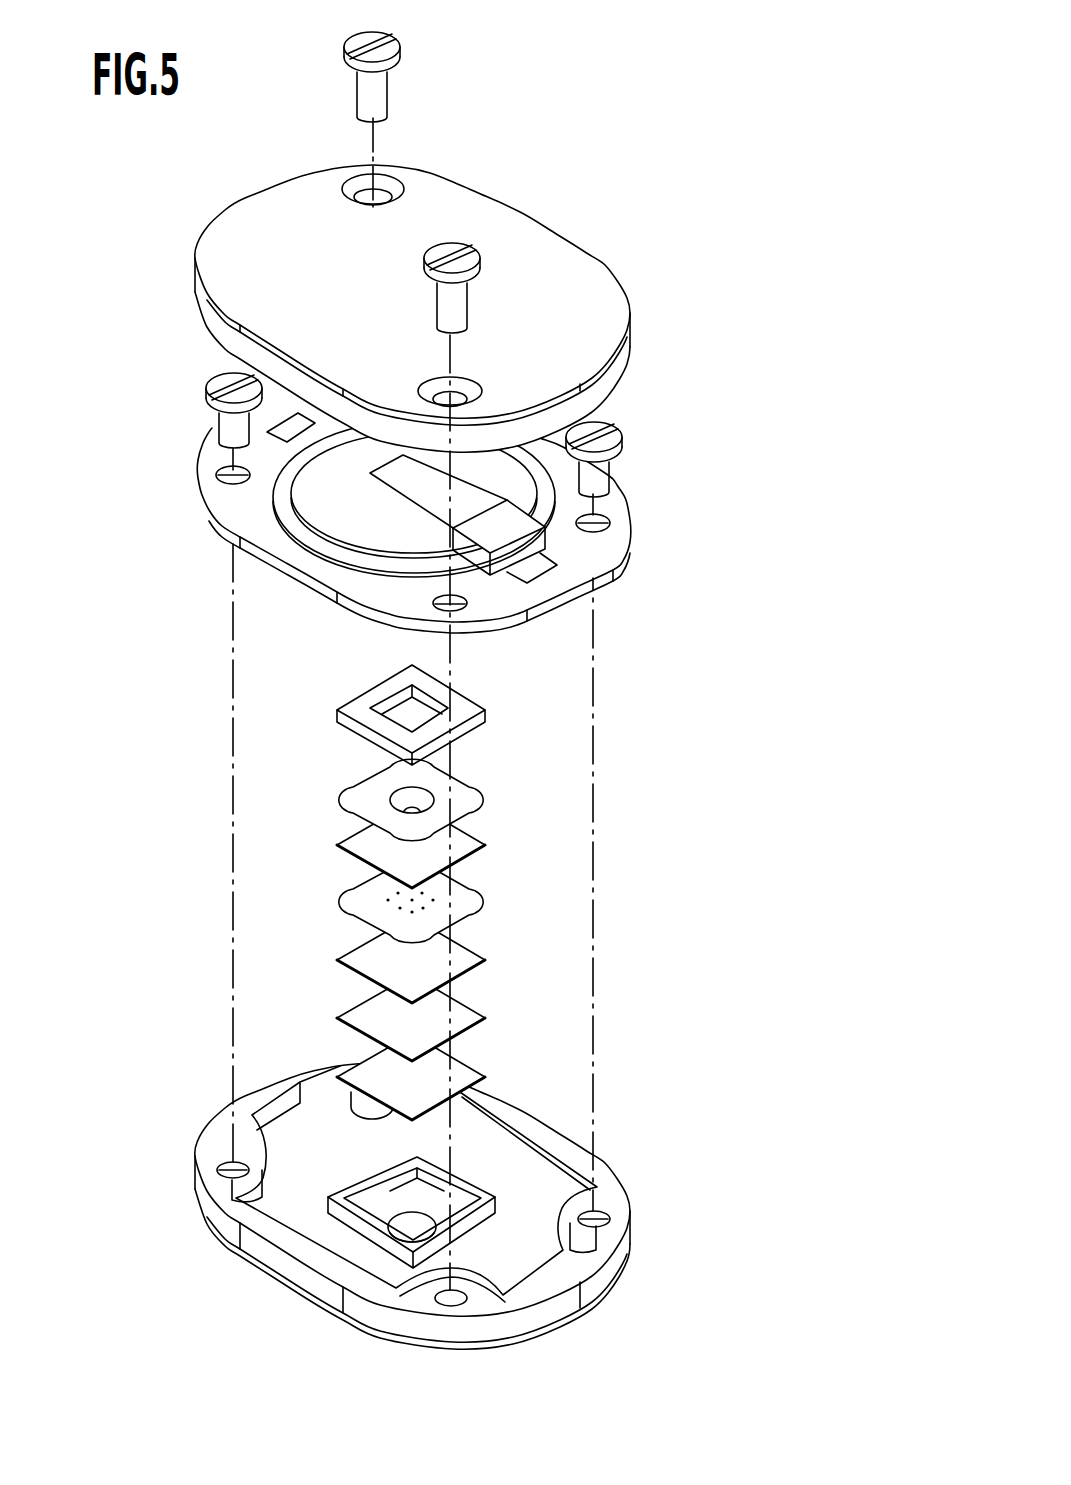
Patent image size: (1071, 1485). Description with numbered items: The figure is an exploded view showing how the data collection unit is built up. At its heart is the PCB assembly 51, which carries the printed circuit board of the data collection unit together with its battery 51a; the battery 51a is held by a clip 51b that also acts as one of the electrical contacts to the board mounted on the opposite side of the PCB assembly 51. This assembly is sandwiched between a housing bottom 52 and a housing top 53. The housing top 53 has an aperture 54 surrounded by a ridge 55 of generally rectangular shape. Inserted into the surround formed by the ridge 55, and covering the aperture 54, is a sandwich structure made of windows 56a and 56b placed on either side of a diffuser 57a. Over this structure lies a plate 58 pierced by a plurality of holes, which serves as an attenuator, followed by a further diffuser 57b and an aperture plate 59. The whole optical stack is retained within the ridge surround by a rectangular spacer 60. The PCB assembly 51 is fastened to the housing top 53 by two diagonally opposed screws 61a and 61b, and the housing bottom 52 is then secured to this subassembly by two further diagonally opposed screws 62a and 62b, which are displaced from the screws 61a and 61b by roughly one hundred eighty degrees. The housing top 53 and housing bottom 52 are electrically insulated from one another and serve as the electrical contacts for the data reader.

The PCB assembly 51 is at (627, 545).
The battery 51a is at (290, 502).
The clip 51b is at (422, 493).
The housing bottom 52 is at (625, 283).
The housing top 53 is at (633, 1213).
The aperture 54 is at (407, 1227).
The ridge 55 is at (340, 1223).
The window 56a is at (495, 1077).
The window 56b is at (493, 958).
The diffuser 57a is at (495, 1017).
The further diffuser 57b is at (495, 845).
The plate with a plurality of holes 58 is at (492, 898).
The aperture plate 59 is at (495, 788).
The rectangular spacer 60 is at (493, 710).
The screw 61a is at (627, 435).
The screw 61b is at (207, 392).
The screw 62a is at (410, 55).
The screw 62b is at (477, 260).